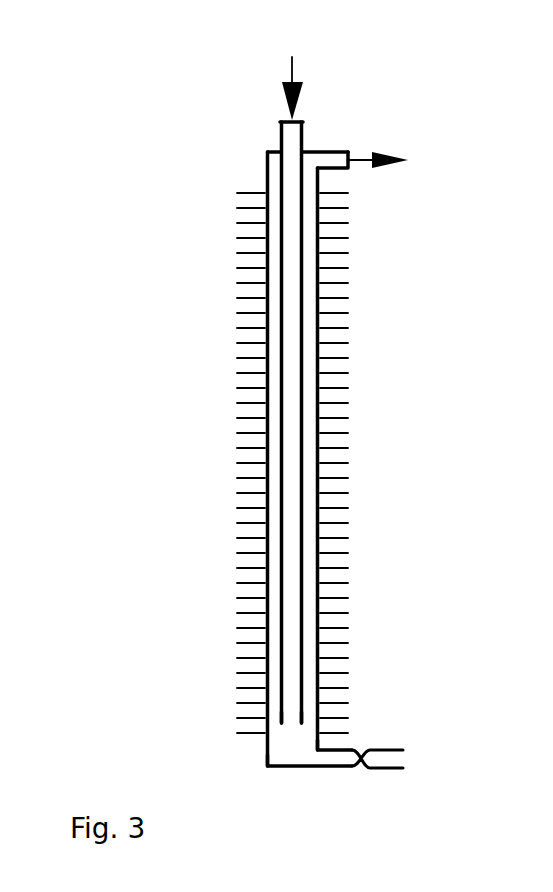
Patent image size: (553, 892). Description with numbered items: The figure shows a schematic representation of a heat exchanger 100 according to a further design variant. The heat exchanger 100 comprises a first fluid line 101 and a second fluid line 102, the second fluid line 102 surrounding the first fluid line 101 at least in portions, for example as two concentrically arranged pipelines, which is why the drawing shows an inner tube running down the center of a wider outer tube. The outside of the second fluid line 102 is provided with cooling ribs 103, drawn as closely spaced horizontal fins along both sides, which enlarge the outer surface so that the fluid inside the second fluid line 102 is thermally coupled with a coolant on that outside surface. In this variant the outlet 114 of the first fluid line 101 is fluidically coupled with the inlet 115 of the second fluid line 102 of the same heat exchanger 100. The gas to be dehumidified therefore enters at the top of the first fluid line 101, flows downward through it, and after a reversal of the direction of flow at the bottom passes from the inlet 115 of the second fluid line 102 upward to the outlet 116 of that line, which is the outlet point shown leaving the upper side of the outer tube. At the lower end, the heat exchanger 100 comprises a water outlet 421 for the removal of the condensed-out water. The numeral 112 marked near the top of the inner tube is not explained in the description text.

The heat exchanger 100 is at (158, 198).
The first fluid line 101 is at (302, 595).
The second fluid line 102 is at (320, 447).
The cooling ribs 103 is at (343, 350).
The inlet of inner tube 112 is at (281, 123).
The outlet of the first fluid line 114 is at (291, 713).
The inlet of the second fluid line 115 is at (304, 717).
The outlet of the second fluid line 116 is at (333, 152).
The water outlet 421 is at (362, 773).